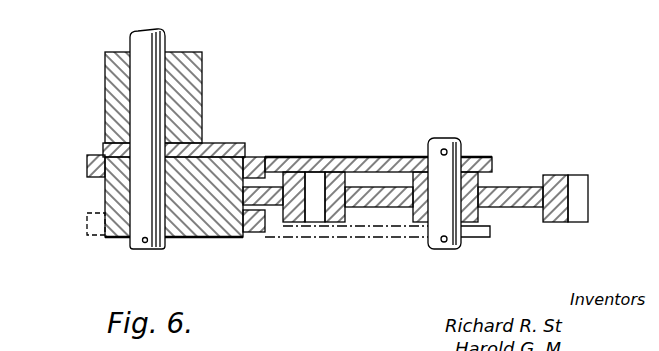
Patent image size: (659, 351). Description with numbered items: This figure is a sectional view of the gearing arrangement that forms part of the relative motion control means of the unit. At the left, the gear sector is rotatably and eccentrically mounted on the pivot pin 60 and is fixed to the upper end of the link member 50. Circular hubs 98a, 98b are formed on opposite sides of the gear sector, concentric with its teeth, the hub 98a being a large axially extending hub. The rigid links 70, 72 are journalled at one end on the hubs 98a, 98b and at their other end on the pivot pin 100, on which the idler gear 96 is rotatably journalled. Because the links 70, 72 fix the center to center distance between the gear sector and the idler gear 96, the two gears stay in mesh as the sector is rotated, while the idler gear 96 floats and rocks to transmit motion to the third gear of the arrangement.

The link member 50 is at (204, 70).
The pivot pin 60 is at (131, 33).
The link 70 is at (342, 240).
The link 72 is at (345, 157).
The idler gear 96 is at (582, 186).
The hub 98a is at (105, 236).
The hub 98b is at (104, 144).
The pivot pin 100 is at (462, 143).